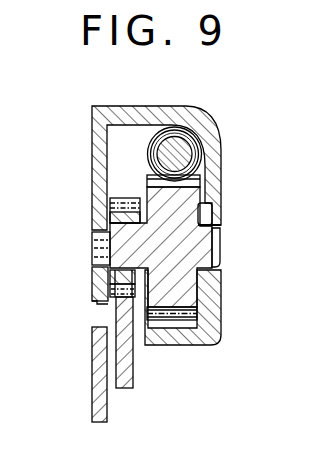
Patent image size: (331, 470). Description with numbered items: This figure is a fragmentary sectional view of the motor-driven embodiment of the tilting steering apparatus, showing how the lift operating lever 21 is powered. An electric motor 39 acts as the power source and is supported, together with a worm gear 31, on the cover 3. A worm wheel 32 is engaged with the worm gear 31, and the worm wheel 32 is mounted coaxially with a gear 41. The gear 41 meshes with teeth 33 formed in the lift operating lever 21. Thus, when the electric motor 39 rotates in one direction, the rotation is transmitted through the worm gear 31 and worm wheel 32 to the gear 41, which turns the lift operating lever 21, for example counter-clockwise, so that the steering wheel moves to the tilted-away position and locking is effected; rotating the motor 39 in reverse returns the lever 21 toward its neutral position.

The cover 3 is at (92, 375).
The lift operating lever 21 is at (133, 372).
The worm gear 31 is at (188, 131).
The worm wheel 32 is at (177, 246).
The teeth 33 is at (118, 296).
The electric motor 39 is at (212, 166).
The gear 41 is at (107, 198).